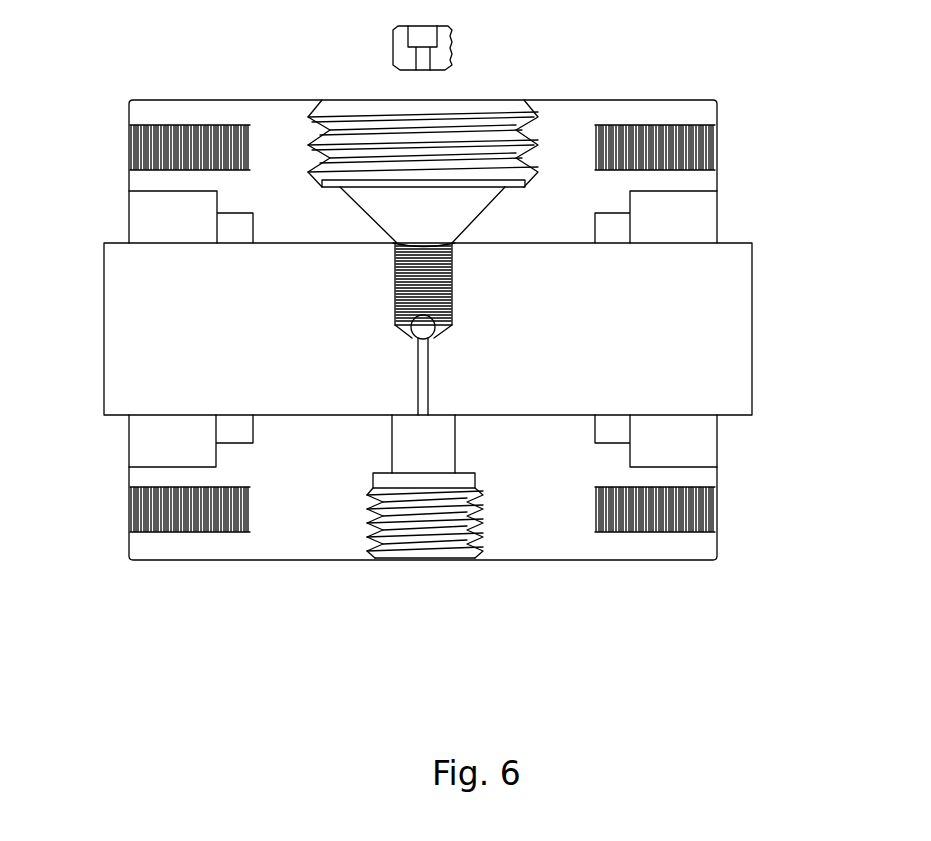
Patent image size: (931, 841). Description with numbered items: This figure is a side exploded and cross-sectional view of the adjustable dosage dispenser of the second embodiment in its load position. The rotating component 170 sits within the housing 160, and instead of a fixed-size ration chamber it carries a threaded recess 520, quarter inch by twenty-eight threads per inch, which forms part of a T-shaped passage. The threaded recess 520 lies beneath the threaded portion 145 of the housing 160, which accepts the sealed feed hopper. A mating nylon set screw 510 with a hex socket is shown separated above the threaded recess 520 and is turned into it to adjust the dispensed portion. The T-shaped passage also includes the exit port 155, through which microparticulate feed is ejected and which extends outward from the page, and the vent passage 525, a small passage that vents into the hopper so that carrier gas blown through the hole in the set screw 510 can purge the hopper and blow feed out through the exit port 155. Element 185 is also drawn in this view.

The set screw 510 is at (394, 60).
The threaded portion 145 is at (478, 130).
The housing 160 is at (423, 171).
The rotating component 170 is at (428, 329).
The threaded recess 520 is at (452, 300).
The vent passage 525 is at (423, 358).
The exit port 155 is at (434, 336).
The lower threaded hole 185 is at (455, 532).